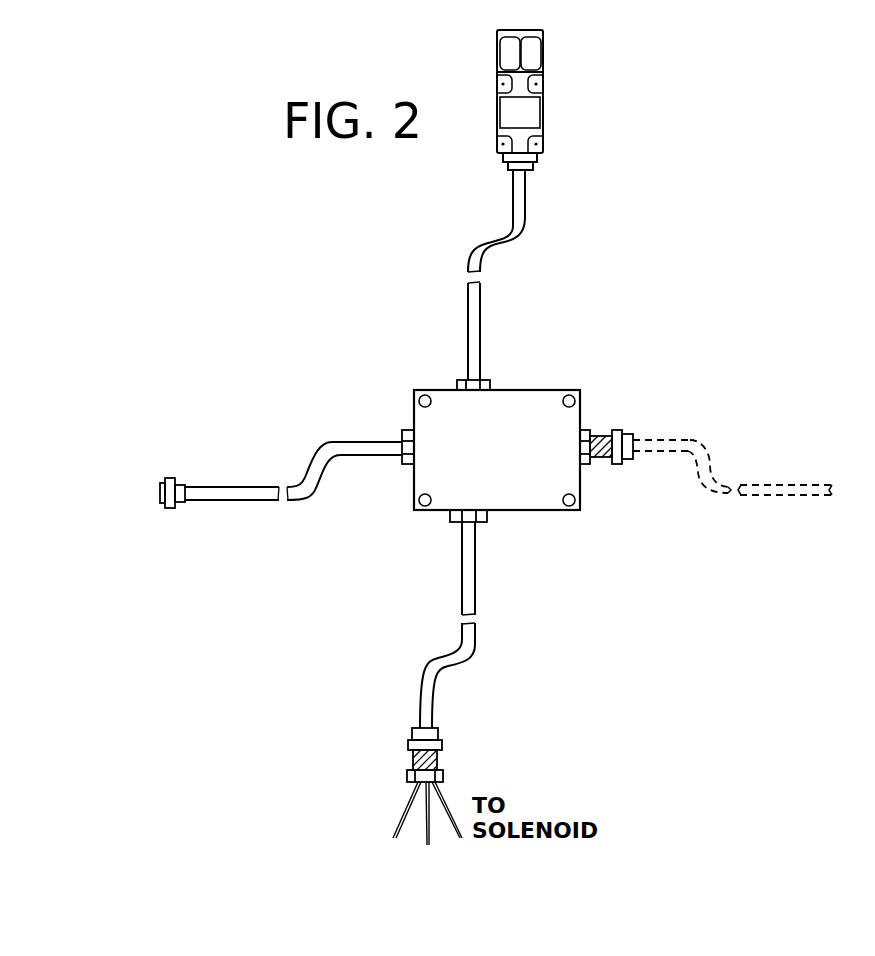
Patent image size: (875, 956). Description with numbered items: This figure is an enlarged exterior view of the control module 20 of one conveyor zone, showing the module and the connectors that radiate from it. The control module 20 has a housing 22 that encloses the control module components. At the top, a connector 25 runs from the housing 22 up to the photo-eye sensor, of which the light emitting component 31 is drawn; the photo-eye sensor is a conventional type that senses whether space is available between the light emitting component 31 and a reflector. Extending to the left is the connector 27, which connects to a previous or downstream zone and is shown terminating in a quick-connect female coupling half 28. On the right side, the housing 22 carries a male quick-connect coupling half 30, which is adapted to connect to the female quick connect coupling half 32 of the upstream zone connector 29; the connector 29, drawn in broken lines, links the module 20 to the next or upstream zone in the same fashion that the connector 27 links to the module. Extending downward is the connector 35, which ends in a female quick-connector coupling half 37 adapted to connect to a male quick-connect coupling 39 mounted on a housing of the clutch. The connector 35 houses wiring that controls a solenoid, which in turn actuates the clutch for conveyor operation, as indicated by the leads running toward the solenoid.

The control module 20 is at (556, 445).
The housing 22 is at (543, 510).
The connector 25 is at (524, 226).
The connector 27 is at (310, 500).
The quick-connect female coupling half 28 is at (168, 480).
The connector 29 is at (705, 446).
The male quick-connect coupling half 30 is at (602, 460).
The light emitting component 31 is at (574, 90).
The female quick connect coupling half 32 is at (627, 432).
The connector 35 is at (468, 650).
The female quick-connector coupling half 37 is at (442, 742).
The male quick-connect coupling 39 is at (412, 763).